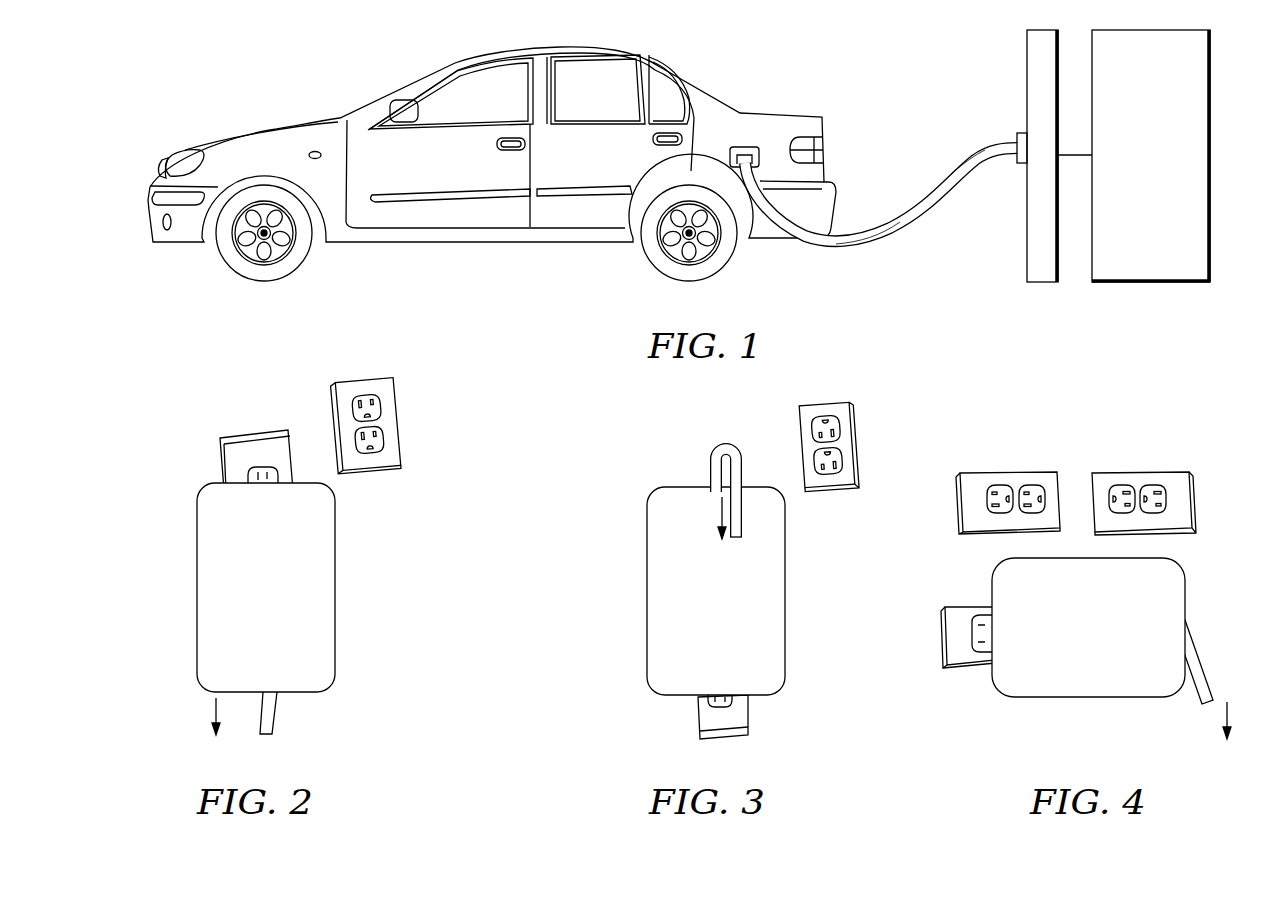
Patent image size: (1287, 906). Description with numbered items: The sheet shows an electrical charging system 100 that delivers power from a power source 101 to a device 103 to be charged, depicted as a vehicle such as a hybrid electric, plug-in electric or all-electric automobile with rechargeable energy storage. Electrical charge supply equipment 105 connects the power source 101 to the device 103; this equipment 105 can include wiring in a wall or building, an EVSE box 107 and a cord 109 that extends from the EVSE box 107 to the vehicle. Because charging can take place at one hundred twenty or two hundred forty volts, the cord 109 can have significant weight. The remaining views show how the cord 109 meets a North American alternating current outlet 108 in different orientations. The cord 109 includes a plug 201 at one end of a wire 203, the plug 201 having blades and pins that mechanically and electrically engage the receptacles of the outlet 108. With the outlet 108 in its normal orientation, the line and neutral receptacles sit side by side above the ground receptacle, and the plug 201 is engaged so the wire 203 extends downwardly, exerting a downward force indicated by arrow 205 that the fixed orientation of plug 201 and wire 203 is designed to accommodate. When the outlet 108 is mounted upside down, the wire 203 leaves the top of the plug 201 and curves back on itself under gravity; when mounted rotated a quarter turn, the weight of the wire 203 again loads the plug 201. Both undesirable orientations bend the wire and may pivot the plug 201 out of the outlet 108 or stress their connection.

In FIG. 1, the electrical charging system 100 is at (216, 70).
In FIG. 1, the power source 101 is at (1212, 139).
In FIG. 1, the device to be charged 103 is at (747, 113).
In FIG. 1, the electrical charge supply equipment 105 is at (935, 92).
In FIG. 1, the EVSE box 107 is at (1019, 131).
In FIG. 2, the EVSE box 107 is at (292, 593).
In FIG. 3, the EVSE box 107 is at (786, 591).
In FIG. 4, the EVSE box 107 is at (1184, 562).
In FIG. 2, the outlet 108 is at (253, 430).
In FIG. 3, the outlet 108 is at (750, 718).
In FIG. 4, the outlet 108 is at (945, 635).
In FIG. 1, the cord 109 is at (840, 250).
In FIG. 2, the cord 109 is at (318, 563).
In FIG. 2, the plug 201 is at (335, 685).
In FIG. 2, the wire 203 is at (278, 712).
In FIG. 2, the arrow 205 is at (212, 711).